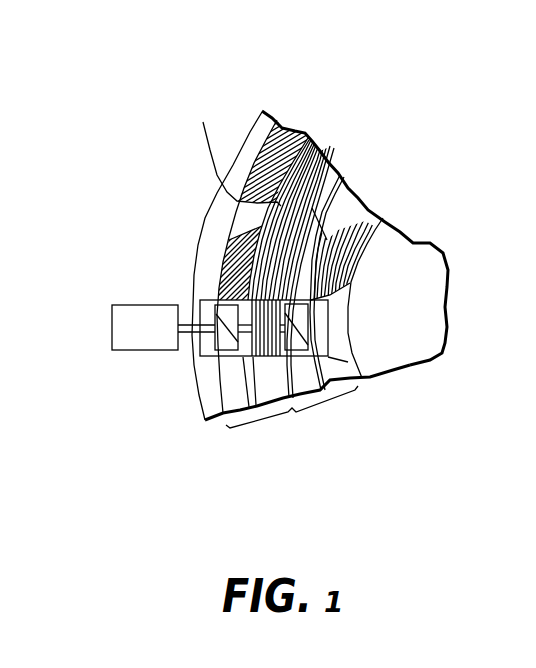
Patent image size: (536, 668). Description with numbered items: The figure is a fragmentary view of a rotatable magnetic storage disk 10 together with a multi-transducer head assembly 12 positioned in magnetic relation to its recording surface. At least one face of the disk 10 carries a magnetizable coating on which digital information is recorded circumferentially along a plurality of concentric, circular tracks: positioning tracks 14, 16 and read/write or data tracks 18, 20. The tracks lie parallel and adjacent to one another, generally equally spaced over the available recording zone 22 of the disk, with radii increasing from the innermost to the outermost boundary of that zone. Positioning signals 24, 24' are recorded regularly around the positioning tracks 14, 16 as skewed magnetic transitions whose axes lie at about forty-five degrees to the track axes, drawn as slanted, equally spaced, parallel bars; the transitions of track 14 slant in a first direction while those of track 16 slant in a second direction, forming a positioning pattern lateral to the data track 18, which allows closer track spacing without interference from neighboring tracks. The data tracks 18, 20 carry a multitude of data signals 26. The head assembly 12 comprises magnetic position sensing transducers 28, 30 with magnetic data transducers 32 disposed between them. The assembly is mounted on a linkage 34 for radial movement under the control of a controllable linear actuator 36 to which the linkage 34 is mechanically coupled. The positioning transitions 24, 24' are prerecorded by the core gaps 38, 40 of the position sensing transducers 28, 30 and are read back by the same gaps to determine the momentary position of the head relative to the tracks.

The rotatable magnetic storage disk 10 is at (355, 238).
The multi-transducer head assembly 12 is at (147, 370).
The positioning track 14 is at (255, 218).
The positioning track 16 is at (334, 238).
The data track 18 is at (283, 233).
The data track 20 is at (357, 249).
The recording zone 22 is at (292, 437).
The positioning signals 24 is at (225, 272).
The positioning signals 24' is at (357, 296).
The data signals 26 is at (225, 151).
The position sensing transducer 28 is at (182, 391).
The position sensing transducer 30 is at (344, 318).
The data transducer 32 is at (240, 291).
The linkage 34 is at (300, 430).
The controllable linear actuator 36 is at (109, 290).
The core gap 38 is at (183, 304).
The core gap 40 is at (376, 413).